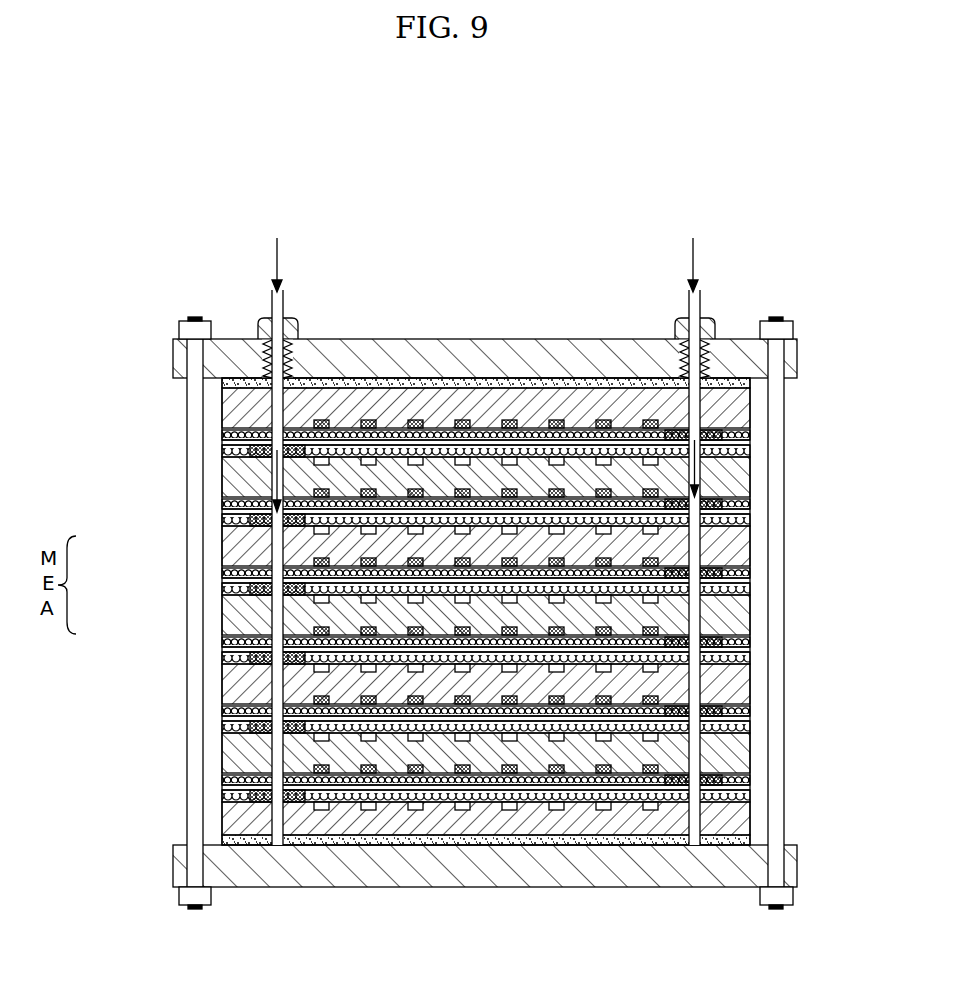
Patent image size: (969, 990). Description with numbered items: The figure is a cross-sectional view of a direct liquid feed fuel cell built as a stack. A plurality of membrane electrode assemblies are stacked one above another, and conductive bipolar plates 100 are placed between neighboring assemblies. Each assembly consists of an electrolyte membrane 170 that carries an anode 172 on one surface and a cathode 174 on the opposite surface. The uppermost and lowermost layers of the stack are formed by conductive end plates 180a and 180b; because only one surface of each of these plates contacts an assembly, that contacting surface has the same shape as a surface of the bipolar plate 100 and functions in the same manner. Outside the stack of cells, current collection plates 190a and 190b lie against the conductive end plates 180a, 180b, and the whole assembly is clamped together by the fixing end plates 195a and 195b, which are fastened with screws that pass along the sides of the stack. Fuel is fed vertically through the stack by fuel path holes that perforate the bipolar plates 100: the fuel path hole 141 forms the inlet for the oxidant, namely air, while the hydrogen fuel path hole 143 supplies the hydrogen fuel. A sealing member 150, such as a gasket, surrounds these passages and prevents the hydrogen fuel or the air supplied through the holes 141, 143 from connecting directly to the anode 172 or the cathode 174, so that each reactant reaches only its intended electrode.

The bipolar plate 100 is at (750, 480).
The fuel path hole 141 is at (701, 298).
The hydrogen fuel path hole 143 is at (286, 298).
The sealing member 150 is at (248, 467).
The electrolyte membrane 170 is at (222, 579).
The anode 172 is at (222, 567).
The cathode 174 is at (222, 592).
The conductive end plate 180a is at (230, 406).
The conductive end plate 180b is at (235, 820).
The current collection plate 190a is at (750, 384).
The current collection plate 190b is at (748, 838).
The fixing end plate 195a is at (507, 343).
The fixing end plate 195b is at (497, 888).